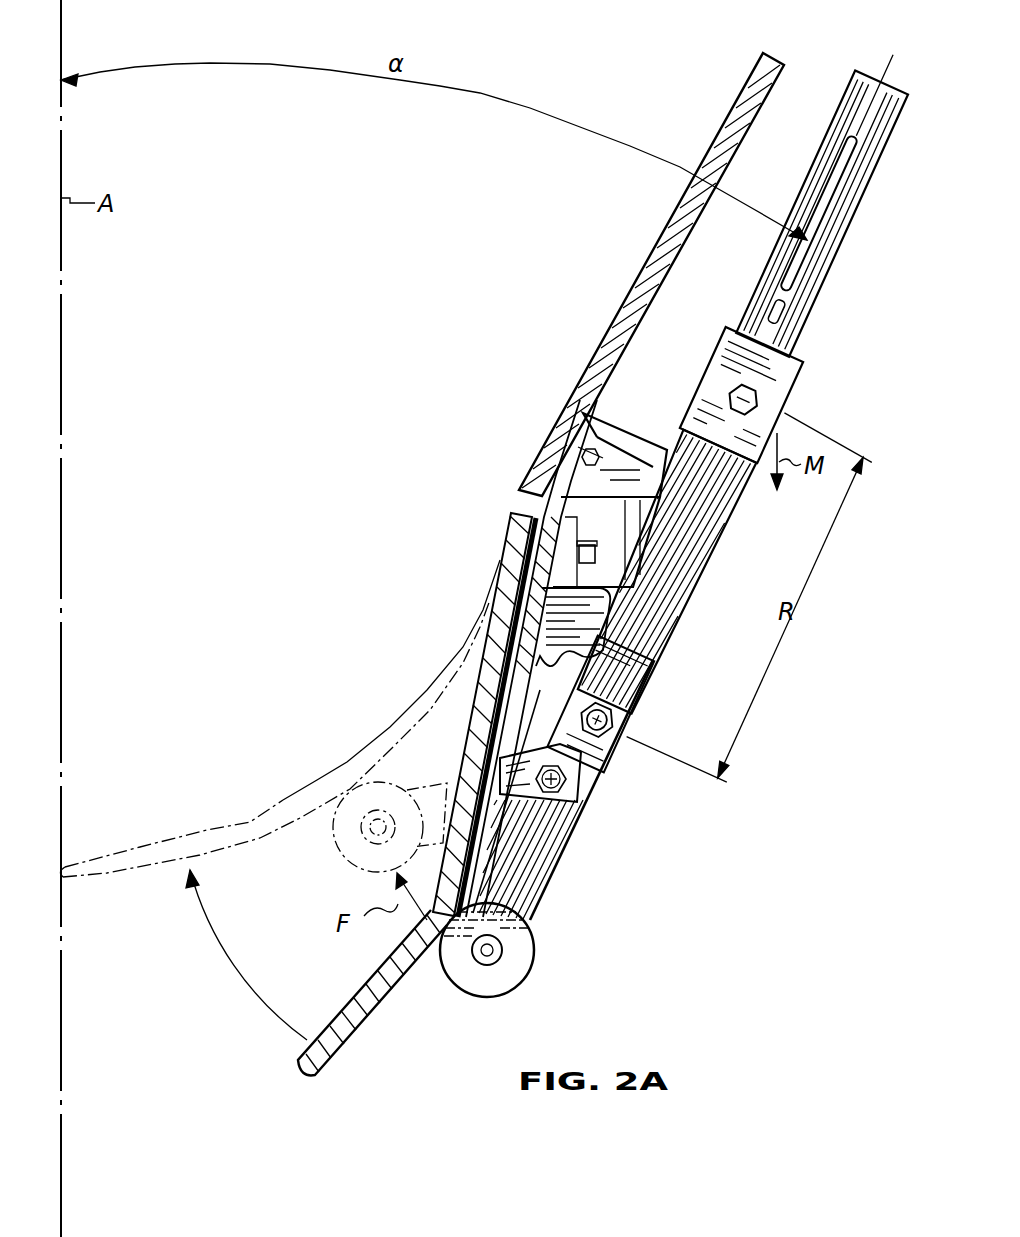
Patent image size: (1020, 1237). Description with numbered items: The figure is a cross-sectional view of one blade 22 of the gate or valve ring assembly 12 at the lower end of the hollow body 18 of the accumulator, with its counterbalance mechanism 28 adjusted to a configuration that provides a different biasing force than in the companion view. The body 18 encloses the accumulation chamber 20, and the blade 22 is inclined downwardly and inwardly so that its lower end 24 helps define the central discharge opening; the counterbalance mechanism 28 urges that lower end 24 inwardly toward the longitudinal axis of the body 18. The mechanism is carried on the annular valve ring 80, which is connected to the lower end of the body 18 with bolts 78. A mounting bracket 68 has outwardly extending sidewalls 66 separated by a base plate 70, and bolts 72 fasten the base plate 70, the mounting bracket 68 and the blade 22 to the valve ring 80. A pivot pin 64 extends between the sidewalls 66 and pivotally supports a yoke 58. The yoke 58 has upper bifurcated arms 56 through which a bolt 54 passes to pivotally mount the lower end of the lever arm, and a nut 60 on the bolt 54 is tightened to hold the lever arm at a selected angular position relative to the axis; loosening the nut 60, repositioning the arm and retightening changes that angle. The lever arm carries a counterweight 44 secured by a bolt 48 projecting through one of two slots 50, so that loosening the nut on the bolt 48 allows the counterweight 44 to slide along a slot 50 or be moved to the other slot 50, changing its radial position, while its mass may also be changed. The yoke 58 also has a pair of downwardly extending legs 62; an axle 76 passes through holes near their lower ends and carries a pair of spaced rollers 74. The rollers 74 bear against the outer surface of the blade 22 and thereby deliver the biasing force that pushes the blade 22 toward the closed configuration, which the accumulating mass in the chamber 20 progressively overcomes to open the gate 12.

The valve ring assembly 12 is at (229, 679).
The hollow body 18 is at (645, 268).
The accumulation chamber 20 is at (262, 250).
The blade 22 is at (497, 683).
The lower end of blade 24 is at (299, 1073).
The counterbalance mechanism 28 is at (830, 328).
The counterweight 44 is at (802, 395).
The bolt 48 is at (735, 390).
The slot 50 is at (848, 198).
The bolt 54 is at (614, 704).
The upper bifurcated arms 56 is at (617, 752).
The yoke 58 is at (556, 884).
The nut 60 is at (548, 716).
The downwardly extending legs 62 is at (528, 898).
The pivot pin 64 is at (570, 797).
The sidewalls 66 is at (547, 632).
The mounting bracket 68 is at (548, 552).
The base plate 70 is at (517, 712).
The bolt 72 is at (582, 545).
The roller 74 is at (347, 852).
The axle 76 is at (500, 958).
The bolt 78 is at (578, 462).
The valve ring 80 is at (713, 556).